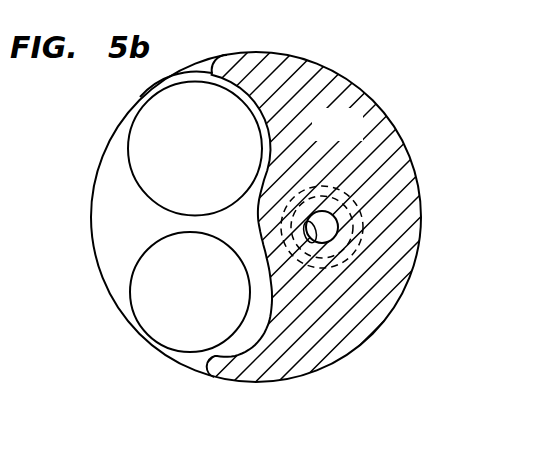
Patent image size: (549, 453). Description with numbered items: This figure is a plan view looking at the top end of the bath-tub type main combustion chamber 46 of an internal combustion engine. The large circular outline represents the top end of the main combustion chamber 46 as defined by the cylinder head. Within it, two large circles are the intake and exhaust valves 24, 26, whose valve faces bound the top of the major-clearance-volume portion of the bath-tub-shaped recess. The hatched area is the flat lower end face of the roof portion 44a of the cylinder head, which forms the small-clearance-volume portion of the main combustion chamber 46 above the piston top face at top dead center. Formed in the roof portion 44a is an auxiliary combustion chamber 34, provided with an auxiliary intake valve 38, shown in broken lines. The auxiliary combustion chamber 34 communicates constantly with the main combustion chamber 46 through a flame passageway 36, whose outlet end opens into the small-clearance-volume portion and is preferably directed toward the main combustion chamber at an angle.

The intake valve 24 is at (142, 137).
The exhaust valve 26 is at (141, 288).
The auxiliary combustion chamber 34 is at (362, 212).
The flame passageway 36 is at (310, 243).
The auxiliary intake valve 38 is at (353, 256).
The roof portion 44a is at (358, 137).
The main combustion chamber 46 is at (96, 192).